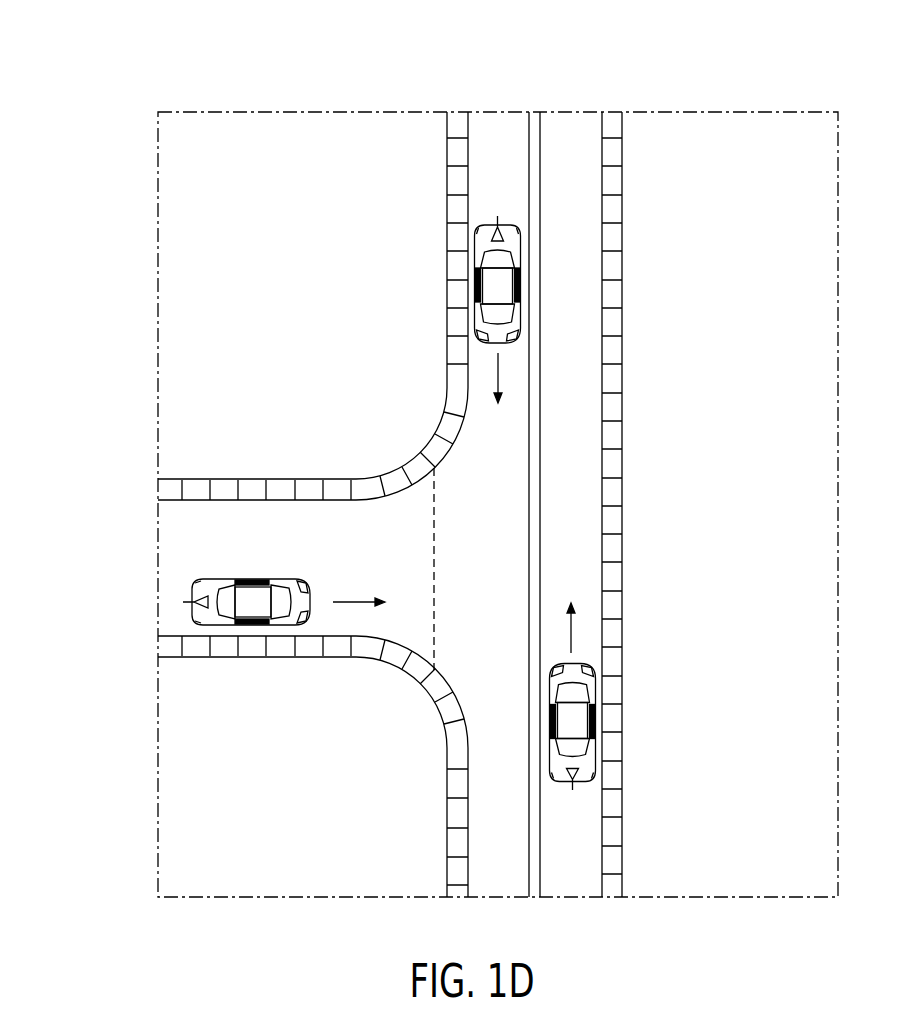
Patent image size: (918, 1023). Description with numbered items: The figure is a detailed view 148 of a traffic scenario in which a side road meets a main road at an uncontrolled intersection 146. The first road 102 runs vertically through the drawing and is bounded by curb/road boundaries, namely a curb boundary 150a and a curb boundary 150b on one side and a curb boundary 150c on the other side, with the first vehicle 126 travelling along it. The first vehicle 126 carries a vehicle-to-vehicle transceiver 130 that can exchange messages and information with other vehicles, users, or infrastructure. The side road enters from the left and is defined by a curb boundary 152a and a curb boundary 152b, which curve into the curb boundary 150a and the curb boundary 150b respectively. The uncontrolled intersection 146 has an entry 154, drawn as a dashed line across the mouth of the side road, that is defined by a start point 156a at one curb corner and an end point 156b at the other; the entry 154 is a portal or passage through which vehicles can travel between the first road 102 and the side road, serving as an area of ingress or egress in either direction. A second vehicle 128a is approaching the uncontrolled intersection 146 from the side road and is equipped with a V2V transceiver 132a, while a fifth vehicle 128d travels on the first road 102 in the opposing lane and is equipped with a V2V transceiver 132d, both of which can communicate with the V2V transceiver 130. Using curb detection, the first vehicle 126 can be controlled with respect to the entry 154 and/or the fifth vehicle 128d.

The detailed view 148 is at (660, 65).
The first road 102 is at (640, 212).
The curb boundary 150b is at (447, 262).
The curb boundary 152b is at (282, 480).
The end point 156b is at (445, 471).
The uncontrolled intersection 146 is at (226, 479).
The curb boundary 150a is at (447, 822).
The curb boundary 152a is at (259, 656).
The start point 156a is at (444, 663).
The entry 154 is at (434, 570).
The curb boundary 150c is at (622, 376).
The fifth vehicle 128d is at (476, 312).
The V2V transceiver 132d is at (495, 226).
The second vehicle 128a is at (278, 578).
The V2V transceiver 132a is at (193, 600).
The first vehicle 126 is at (597, 695).
The V2V transceiver 130 is at (575, 779).